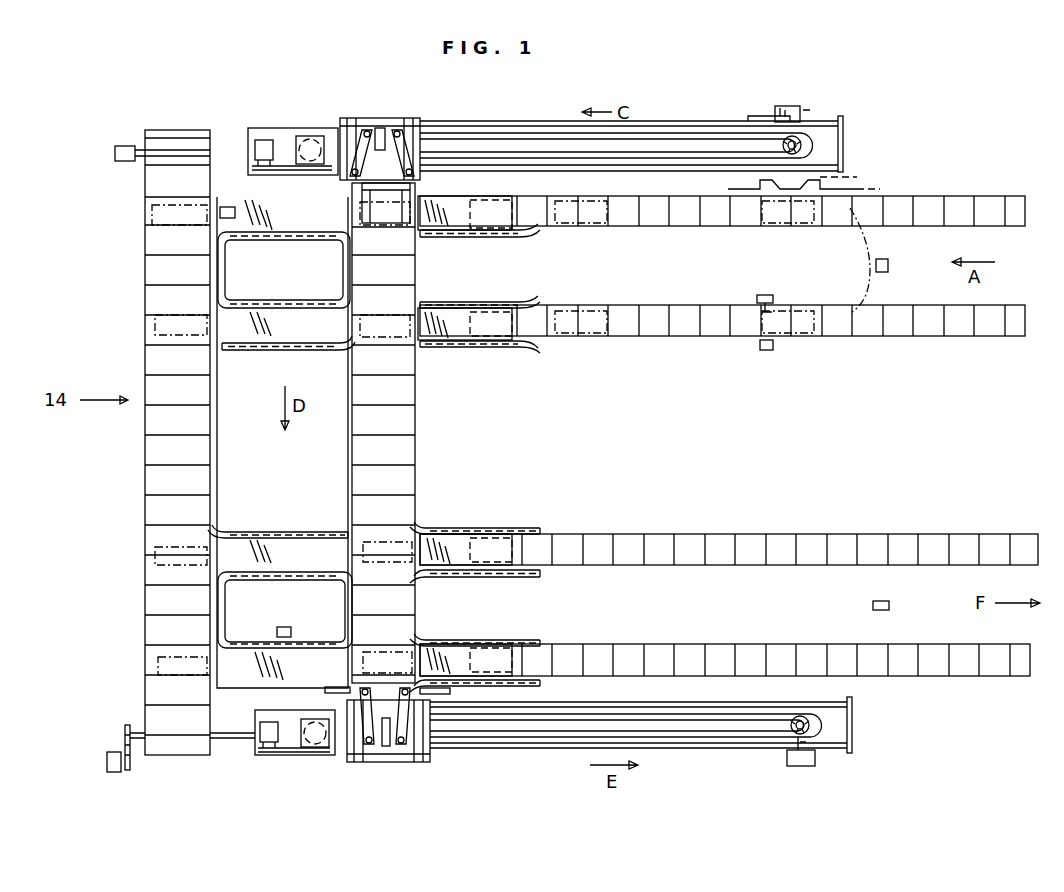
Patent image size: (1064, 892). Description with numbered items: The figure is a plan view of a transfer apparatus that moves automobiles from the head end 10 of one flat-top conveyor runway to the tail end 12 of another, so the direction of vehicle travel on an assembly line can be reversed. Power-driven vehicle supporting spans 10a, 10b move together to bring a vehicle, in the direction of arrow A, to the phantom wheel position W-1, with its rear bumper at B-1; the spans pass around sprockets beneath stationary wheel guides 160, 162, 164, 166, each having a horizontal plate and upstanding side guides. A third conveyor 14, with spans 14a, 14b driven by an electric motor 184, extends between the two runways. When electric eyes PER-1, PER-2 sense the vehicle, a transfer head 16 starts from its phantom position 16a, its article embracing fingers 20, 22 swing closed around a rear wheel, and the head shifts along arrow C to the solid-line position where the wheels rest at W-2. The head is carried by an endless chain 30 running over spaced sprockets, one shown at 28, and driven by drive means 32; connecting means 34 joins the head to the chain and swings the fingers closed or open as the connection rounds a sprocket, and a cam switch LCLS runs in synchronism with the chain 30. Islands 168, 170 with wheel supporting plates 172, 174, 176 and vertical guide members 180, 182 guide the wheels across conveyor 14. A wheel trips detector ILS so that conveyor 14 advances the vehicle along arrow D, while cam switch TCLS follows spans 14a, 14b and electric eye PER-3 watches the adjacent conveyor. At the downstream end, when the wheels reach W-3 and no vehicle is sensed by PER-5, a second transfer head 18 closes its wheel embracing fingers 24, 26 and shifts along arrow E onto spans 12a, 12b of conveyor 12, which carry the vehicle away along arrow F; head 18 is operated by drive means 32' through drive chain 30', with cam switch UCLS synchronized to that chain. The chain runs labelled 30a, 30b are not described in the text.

The head end of one conveyor runway 10 is at (722, 280).
The vehicle supporting span 10a is at (960, 207).
The vehicle supporting span 10b is at (932, 327).
The tail end of another conveyor runway 12 is at (729, 591).
The vehicle supporting span 12a is at (970, 548).
The vehicle supporting span 12b is at (992, 664).
The third conveyor 14 is at (272, 442).
The span of conveyor 14 14a is at (190, 489).
The span of conveyor 14 14b is at (398, 489).
The transfer head 16 is at (386, 131).
The phantom position of transfer head 16a is at (756, 116).
The transfer head 18 is at (407, 758).
The article embracing finger 20 is at (362, 206).
The article embracing finger 22 is at (414, 198).
The wheel embracing finger 24 is at (325, 690).
The wheel embracing finger 26 is at (450, 692).
The chain sprocket 28 is at (801, 148).
The endless chain 30 is at (640, 135).
The drive chain 30a is at (590, 160).
The drive chain 30b is at (465, 131).
The drive chain 30' is at (641, 732).
The drive means 32 is at (459, 127).
The drive means 32' is at (295, 747).
The connecting means 34 is at (371, 128).
The stationary wheel guide 160 is at (457, 238).
The stationary wheel guide 162 is at (486, 293).
The stationary wheel guide 164 is at (480, 529).
The stationary wheel guide 166 is at (481, 641).
The island 168 is at (223, 304).
The island 170 is at (226, 583).
The wheel supporting plate 172 is at (327, 219).
The wheel supporting plate 174 is at (324, 331).
The wheel supporting plate 176 is at (316, 567).
The vertical guide member 180 is at (258, 350).
The vertical guide member 182 is at (270, 530).
The electric motor 184 is at (110, 752).
The cam switch TCLS is at (114, 153).
The detector ILS is at (228, 206).
The cam switch LCLS is at (817, 103).
The cam switch UCLS is at (816, 756).
The phantom wheel position W-1 is at (598, 312).
The phantom wheel position W-2 is at (152, 320).
The phantom wheel position W-3 is at (158, 660).
The rear bumper position B-1 is at (868, 303).
The electric eye detector PER-1 is at (892, 252).
The electric eye detector PER-2 is at (760, 344).
The electric eye PER-3 is at (300, 617).
The electric eye detector PER-5 is at (873, 604).